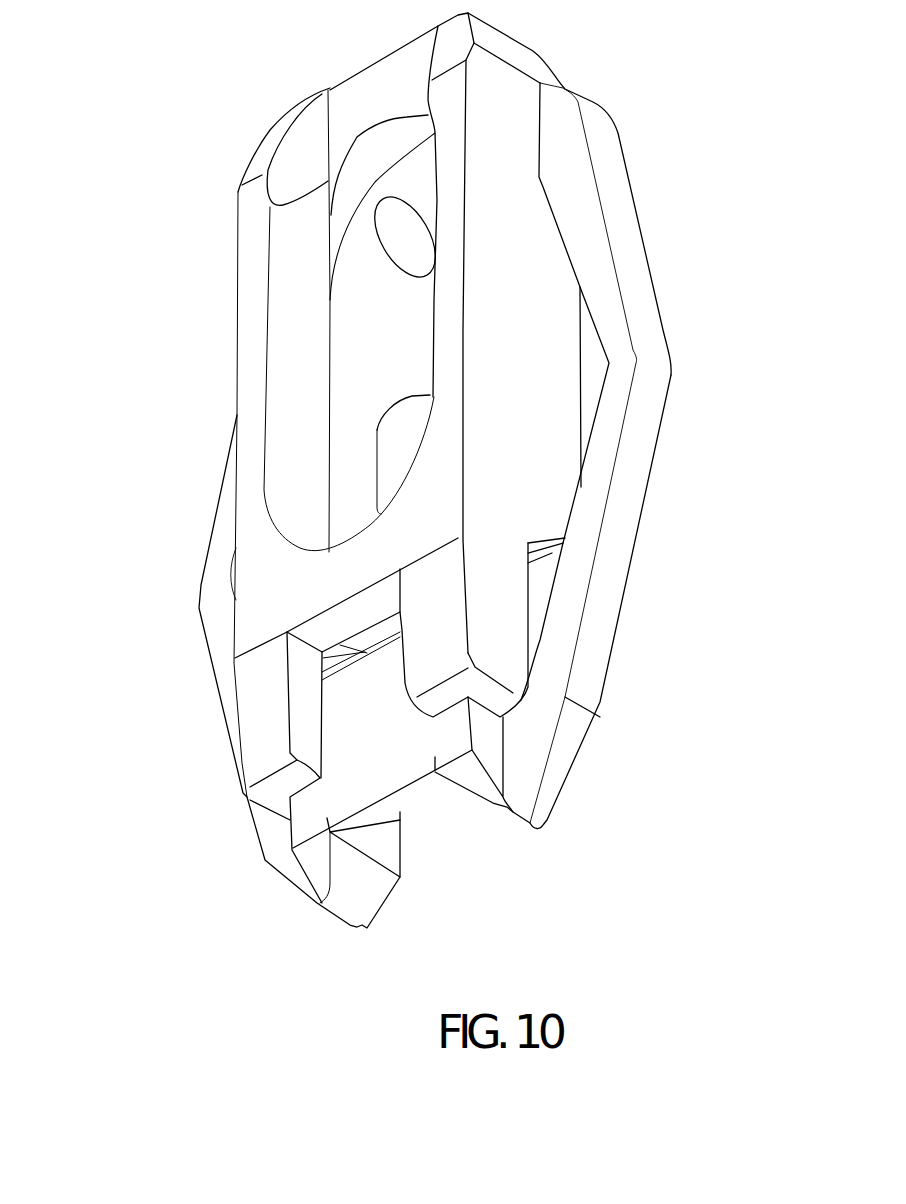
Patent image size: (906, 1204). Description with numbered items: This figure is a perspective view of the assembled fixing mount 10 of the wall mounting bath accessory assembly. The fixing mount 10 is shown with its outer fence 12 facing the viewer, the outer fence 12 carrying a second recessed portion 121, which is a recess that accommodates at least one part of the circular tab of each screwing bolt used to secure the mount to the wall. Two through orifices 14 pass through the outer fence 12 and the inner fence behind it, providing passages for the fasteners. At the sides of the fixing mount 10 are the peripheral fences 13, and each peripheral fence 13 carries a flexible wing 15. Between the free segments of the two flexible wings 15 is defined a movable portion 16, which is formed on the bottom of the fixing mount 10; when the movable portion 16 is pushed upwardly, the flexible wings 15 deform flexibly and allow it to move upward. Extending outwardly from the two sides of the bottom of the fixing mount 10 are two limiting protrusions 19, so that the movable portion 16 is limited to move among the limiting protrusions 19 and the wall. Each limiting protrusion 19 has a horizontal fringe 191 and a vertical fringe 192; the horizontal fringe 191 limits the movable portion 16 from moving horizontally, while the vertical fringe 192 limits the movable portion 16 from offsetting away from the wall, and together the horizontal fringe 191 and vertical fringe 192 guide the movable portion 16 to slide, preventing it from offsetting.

The fixing mount 10 is at (650, 167).
The outer fence 12 is at (257, 543).
The second recessed portion 121 is at (363, 327).
The peripheral fence 13 is at (545, 280).
The through orifice 14 is at (408, 222).
The flexible wing 15 is at (200, 588).
The movable portion 16 is at (405, 762).
The limiting protrusion 19 is at (102, 693).
The horizontal fringe 191 is at (257, 818).
The vertical fringe 192 is at (262, 712).